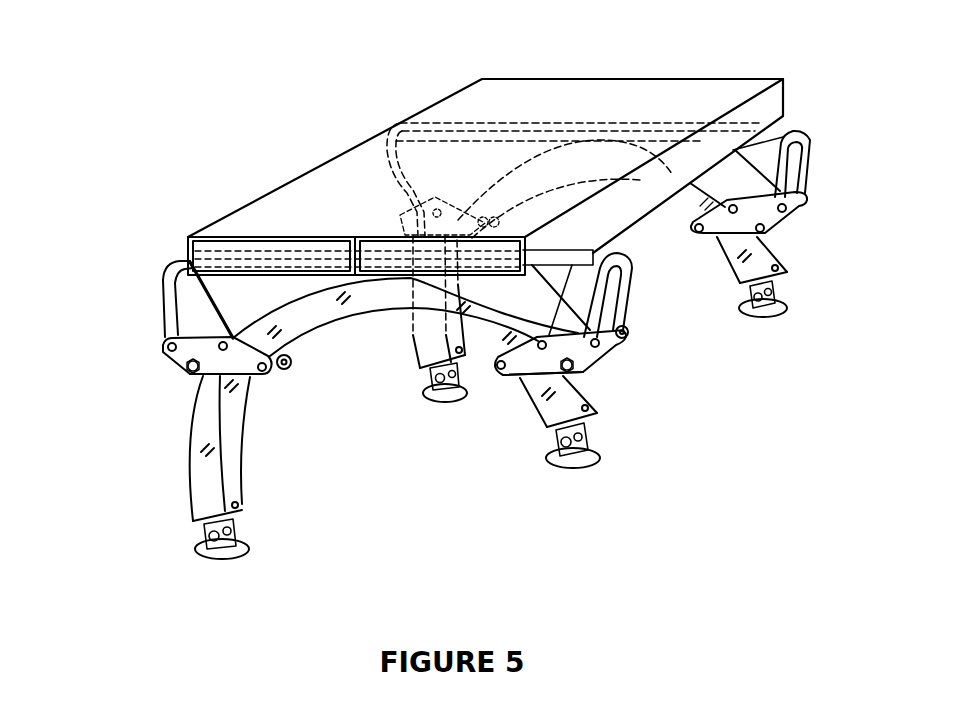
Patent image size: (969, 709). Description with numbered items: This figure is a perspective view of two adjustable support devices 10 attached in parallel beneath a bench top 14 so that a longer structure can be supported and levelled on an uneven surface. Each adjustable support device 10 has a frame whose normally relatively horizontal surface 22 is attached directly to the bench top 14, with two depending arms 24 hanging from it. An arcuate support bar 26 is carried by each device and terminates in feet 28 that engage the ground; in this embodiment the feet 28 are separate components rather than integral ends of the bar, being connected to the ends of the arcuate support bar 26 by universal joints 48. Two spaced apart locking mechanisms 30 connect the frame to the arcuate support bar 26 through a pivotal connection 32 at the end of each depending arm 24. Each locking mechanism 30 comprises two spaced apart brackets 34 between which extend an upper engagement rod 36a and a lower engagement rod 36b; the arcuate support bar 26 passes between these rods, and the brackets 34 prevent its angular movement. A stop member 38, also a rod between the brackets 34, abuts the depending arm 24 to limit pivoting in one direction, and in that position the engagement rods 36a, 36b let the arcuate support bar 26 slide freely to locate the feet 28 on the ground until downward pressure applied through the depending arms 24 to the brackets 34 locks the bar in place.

The adjustable support device 10 is at (158, 411).
The bench top 14 is at (318, 187).
The horizontal surface 22 is at (583, 255).
The depending arms 24 is at (165, 309).
The arcuate support bar 26 is at (368, 300).
The feet 28 is at (238, 558).
The locking mechanism 30 is at (152, 362).
The pivotal connection 32 is at (190, 378).
The brackets 34 is at (232, 378).
The upper engagement rod 36a is at (242, 334).
The lower engagement rod 36b is at (253, 380).
The stop member 38 is at (162, 345).
The universal joints 48 is at (203, 533).